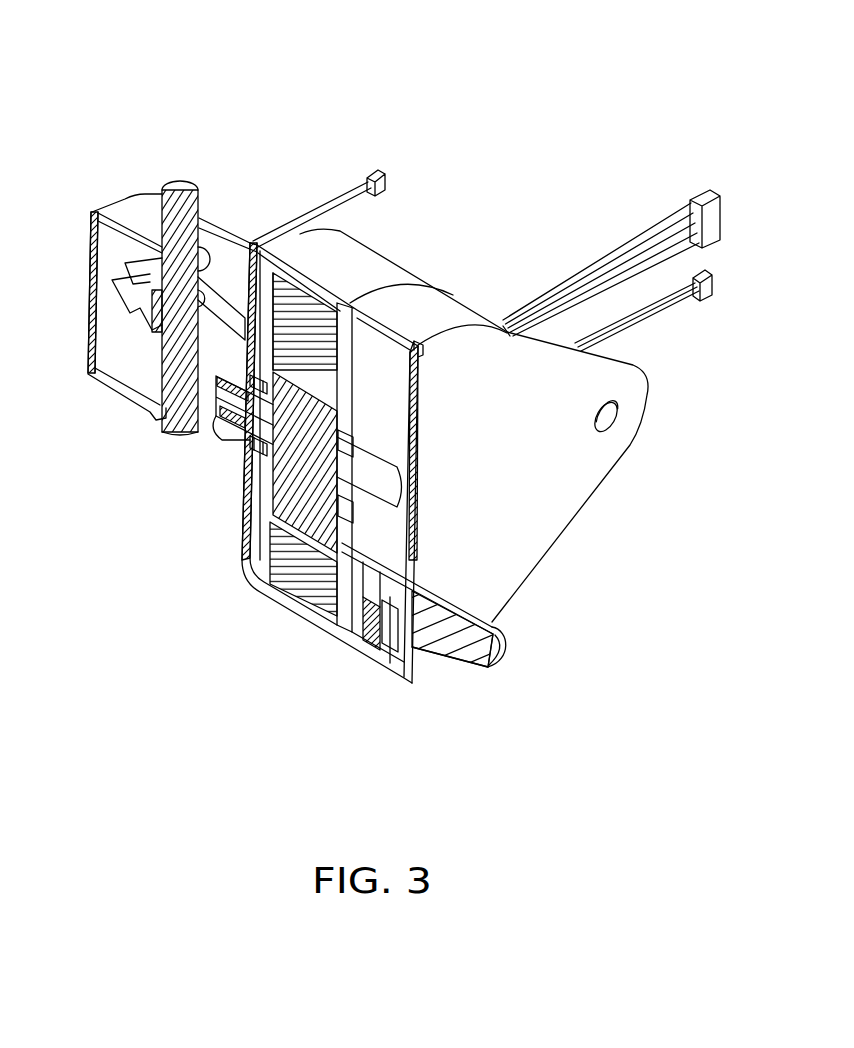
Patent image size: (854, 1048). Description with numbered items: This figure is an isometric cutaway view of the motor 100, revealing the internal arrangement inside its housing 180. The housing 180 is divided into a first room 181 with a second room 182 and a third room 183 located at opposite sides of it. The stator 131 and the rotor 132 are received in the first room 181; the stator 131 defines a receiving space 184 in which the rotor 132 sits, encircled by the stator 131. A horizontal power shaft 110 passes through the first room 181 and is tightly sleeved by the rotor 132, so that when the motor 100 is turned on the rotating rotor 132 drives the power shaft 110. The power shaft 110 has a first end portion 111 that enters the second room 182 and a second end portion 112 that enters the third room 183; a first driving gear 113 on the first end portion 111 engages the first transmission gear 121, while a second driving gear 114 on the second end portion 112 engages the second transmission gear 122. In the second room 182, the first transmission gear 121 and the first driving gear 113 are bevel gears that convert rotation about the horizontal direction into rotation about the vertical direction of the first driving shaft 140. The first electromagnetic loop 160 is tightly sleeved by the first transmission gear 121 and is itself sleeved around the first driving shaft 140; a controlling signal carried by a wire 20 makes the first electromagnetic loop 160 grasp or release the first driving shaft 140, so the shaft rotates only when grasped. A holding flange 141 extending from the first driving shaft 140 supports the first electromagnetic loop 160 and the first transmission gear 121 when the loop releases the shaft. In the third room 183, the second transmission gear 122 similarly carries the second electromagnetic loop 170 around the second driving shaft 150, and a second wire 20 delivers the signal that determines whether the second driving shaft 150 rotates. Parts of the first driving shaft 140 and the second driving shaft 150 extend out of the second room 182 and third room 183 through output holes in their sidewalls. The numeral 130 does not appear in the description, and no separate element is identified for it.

The motor 100 is at (380, 78).
The wire 20 is at (346, 188).
The power shaft 110 is at (290, 442).
The first end portion 111 is at (197, 428).
The second end portion 112 is at (280, 567).
The first driving gear 113 is at (243, 448).
The second driving gear 114 is at (382, 468).
The first transmission gear 121 is at (228, 356).
The second transmission gear 122 is at (367, 647).
The housing 130 is at (252, 596).
The stator 131 is at (300, 303).
The rotor 132 is at (277, 352).
The first driving shaft 140 is at (177, 212).
The holding flange 141 is at (112, 388).
The second driving shaft 150 is at (465, 630).
The first electromagnetic loop 160 is at (137, 275).
The second electromagnetic loop 170 is at (387, 653).
The housing 180 is at (396, 233).
The first room 181 is at (373, 267).
The second room 182 is at (92, 243).
The third room 183 is at (447, 307).
The receiving space 184 is at (505, 322).